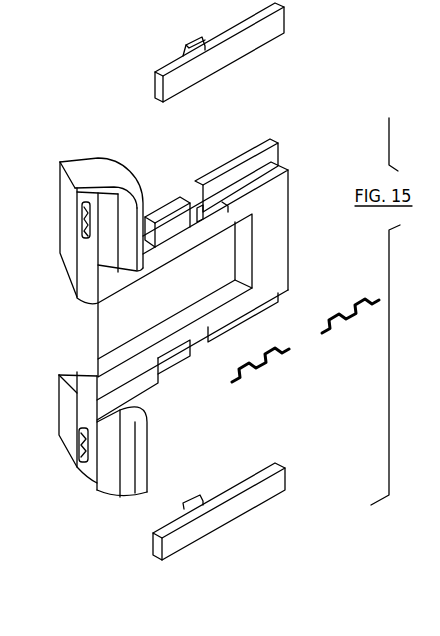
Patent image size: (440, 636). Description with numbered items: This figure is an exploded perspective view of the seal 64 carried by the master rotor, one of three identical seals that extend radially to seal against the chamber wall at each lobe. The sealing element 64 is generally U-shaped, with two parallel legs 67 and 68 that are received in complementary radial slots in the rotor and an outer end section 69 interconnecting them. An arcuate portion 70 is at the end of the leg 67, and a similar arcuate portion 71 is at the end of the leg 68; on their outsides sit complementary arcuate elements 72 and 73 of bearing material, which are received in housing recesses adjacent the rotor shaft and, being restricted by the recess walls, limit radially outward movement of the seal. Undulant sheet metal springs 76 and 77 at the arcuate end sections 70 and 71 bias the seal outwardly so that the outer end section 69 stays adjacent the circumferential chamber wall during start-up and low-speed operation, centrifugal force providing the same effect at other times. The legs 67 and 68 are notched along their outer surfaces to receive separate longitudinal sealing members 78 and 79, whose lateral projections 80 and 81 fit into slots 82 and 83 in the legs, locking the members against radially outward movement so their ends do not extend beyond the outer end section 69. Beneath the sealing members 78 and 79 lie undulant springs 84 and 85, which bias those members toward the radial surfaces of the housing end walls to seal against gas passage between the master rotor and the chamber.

The seal 64 is at (248, 150).
The leg 67 is at (176, 196).
The leg 68 is at (176, 361).
The outer end section 69 is at (273, 240).
The arcuate portion 70 is at (80, 184).
The arcuate portion 71 is at (108, 477).
The arcuate element of bearing material 72 is at (113, 161).
The arcuate element of bearing material 73 is at (146, 480).
The undulant sheet metal spring 76 is at (86, 226).
The undulant sheet metal spring 77 is at (80, 455).
The longitudinal sealing member 78 is at (258, 50).
The longitudinal sealing member 79 is at (196, 530).
The lateral projection 80 is at (188, 52).
The lateral projection 81 is at (186, 507).
The slot 82 is at (200, 206).
The slot 83 is at (195, 342).
The undulant spring 84 is at (353, 325).
The undulant spring 85 is at (257, 378).